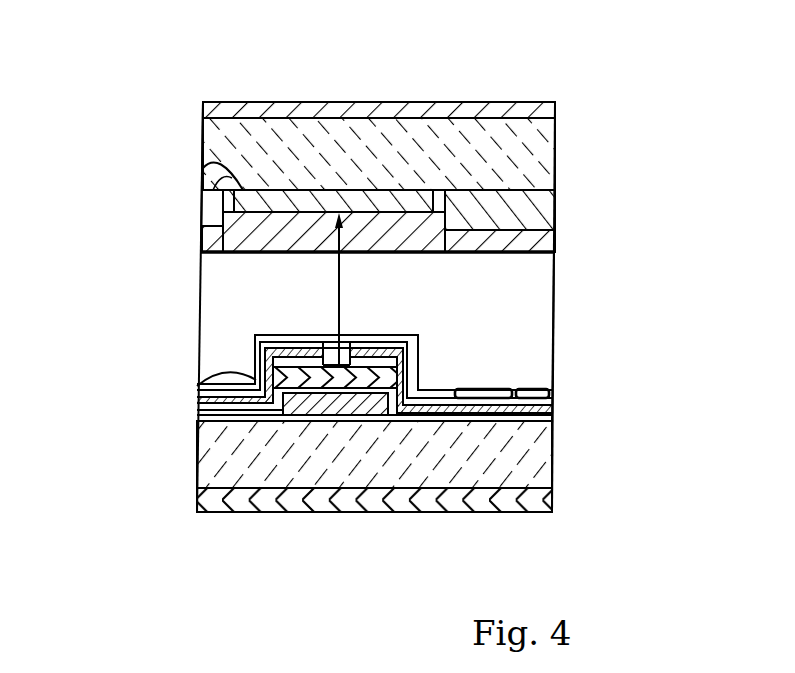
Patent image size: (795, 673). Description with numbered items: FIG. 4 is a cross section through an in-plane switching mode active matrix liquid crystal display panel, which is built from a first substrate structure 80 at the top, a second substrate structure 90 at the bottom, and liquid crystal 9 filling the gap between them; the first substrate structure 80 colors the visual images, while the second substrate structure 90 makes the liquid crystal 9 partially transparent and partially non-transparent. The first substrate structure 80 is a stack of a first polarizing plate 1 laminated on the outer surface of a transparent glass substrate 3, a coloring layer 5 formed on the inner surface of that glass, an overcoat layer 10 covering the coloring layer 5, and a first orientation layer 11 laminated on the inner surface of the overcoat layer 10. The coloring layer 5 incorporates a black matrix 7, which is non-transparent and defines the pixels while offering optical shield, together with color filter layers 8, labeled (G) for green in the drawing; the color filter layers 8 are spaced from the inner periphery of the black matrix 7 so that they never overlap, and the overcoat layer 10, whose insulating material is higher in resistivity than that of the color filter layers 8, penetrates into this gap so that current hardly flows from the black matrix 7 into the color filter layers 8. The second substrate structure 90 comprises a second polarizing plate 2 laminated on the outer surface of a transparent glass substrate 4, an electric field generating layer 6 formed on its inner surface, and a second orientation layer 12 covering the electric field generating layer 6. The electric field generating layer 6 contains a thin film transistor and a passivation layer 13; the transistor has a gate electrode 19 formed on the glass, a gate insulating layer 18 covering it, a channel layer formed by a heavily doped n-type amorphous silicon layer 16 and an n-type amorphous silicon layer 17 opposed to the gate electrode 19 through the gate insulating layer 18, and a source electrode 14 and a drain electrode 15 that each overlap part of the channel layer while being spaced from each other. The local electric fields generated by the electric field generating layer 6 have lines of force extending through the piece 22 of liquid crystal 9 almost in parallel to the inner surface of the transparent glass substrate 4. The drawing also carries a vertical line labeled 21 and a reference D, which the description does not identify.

The first polarizing plate 1 is at (530, 102).
The second polarizing plate 2 is at (552, 511).
The transparent glass substrate 3 is at (555, 163).
The transparent glass substrate 4 is at (553, 478).
The coloring layer 5 is at (588, 200).
The electric field generating layer 6 is at (628, 409).
The black matrix 7 is at (203, 168).
The color filter layers 8 is at (202, 215).
The liquid crystal 9 is at (556, 330).
The overcoat layer 10 is at (555, 248).
The first orientation layer 11 is at (555, 256).
The second orientation layer 12 is at (552, 376).
The passivation layer 13 is at (553, 407).
The source electrode 14 is at (553, 410).
The drain electrode 15 is at (253, 335).
The heavily doped n-type amorphous silicon layer 16 is at (264, 352).
The n-type amorphous silicon layer 17 is at (198, 386).
The gate insulating layer 18 is at (553, 422).
The gate electrode 19 is at (290, 418).
The light path 21 is at (338, 303).
The piece of liquid crystal 22 is at (489, 334).
The first substrate structure 80 is at (156, 93).
The second substrate structure 90 is at (130, 505).
The distance D is at (340, 252).